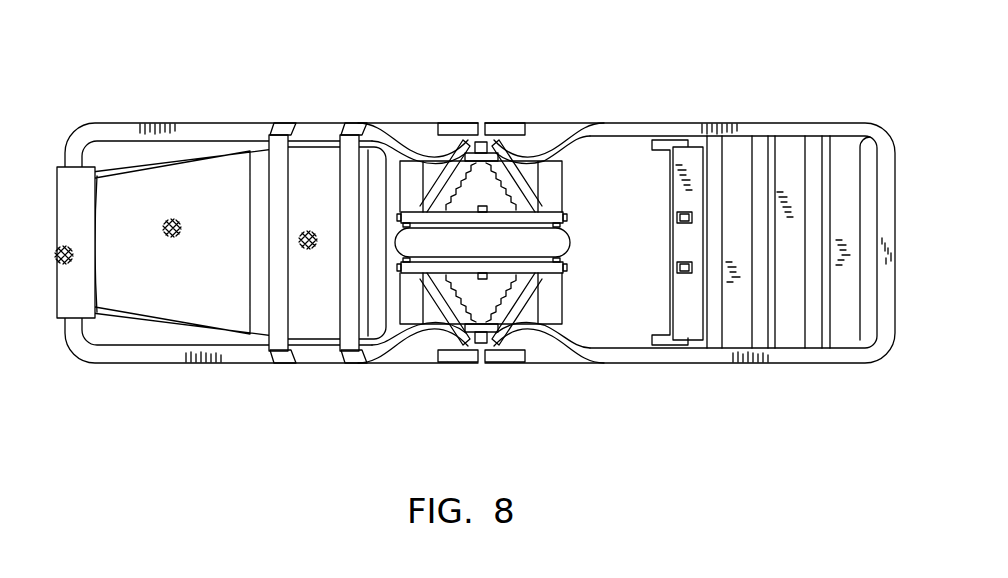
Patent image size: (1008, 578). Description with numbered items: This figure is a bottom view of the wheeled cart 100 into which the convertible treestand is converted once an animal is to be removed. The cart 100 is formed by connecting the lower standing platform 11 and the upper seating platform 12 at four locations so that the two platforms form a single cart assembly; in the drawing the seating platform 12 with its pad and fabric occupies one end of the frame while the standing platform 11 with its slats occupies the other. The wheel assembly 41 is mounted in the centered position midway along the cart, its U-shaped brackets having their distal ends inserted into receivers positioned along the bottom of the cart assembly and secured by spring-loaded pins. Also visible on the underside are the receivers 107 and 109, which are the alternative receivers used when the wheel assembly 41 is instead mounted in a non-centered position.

The cart 100 is at (475, 192).
The lower standing platform 11 is at (768, 123).
The upper seating platform 12 is at (195, 124).
The wheel assembly 41 is at (467, 218).
The receiver 107 is at (677, 217).
The receiver 109 is at (677, 268).